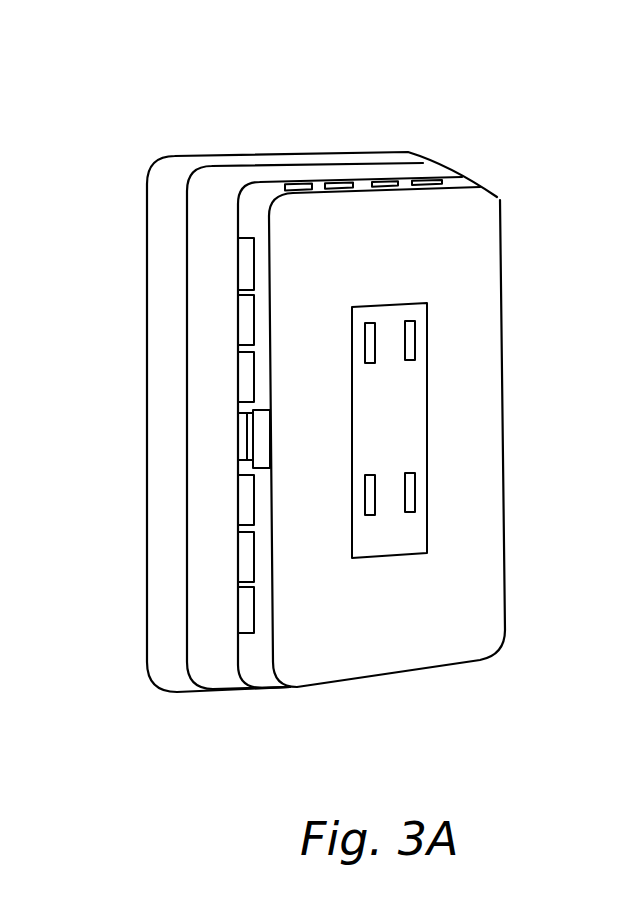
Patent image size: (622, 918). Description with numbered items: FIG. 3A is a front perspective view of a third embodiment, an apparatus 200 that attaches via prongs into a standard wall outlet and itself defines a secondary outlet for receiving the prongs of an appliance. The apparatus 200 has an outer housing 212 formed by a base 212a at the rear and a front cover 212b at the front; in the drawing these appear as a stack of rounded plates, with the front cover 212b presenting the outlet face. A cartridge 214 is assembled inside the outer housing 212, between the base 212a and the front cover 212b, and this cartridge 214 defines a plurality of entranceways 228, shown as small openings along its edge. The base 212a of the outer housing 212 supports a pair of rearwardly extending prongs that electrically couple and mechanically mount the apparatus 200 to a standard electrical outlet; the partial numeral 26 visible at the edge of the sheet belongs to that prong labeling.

The apparatus 200 is at (312, 110).
The outer housing 212 is at (473, 320).
The base 212a is at (168, 175).
The front cover 212b is at (470, 232).
The cartridge 214 is at (245, 587).
The entranceways 228 is at (343, 183).
The component (truncated numeral) 26 is at (607, 553).